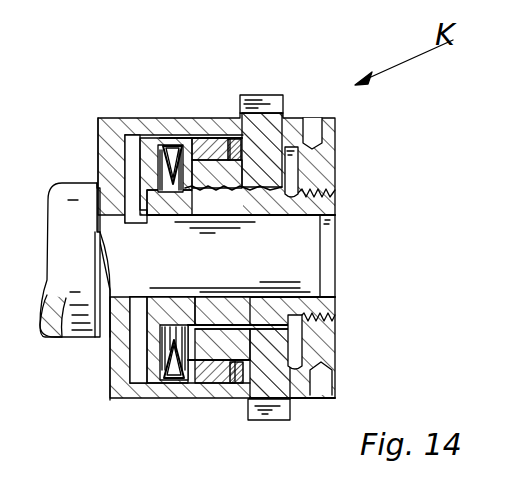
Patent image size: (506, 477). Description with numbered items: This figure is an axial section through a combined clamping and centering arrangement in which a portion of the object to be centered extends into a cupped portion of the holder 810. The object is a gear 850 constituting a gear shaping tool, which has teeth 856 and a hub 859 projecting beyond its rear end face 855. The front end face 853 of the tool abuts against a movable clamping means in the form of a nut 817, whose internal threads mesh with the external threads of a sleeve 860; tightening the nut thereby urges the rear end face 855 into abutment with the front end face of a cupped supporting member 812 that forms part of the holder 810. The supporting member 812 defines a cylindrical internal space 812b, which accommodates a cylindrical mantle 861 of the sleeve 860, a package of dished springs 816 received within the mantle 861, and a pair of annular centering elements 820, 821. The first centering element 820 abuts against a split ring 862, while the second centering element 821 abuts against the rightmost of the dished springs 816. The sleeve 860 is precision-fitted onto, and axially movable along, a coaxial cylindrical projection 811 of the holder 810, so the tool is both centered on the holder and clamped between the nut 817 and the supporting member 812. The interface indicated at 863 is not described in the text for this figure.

The holder 810 is at (70, 355).
The coaxial cylindrical projection 811 is at (262, 253).
The cupped supporting member 812 is at (145, 118).
The cylindrical internal space 812b is at (140, 382).
The dished springs 816 is at (157, 173).
The nut 817 is at (336, 351).
The annular centering element 820 is at (205, 384).
The annular centering element 821 is at (193, 386).
The gear 850 is at (265, 89).
The front end face 853 is at (291, 408).
The rear end face 855 is at (245, 416).
The teeth 856 is at (283, 103).
The hub 859 is at (206, 150).
The sleeve 860 is at (343, 309).
The cylindrical mantle 861 is at (163, 386).
The split ring 862 is at (229, 140).
The interface line 863 is at (256, 320).